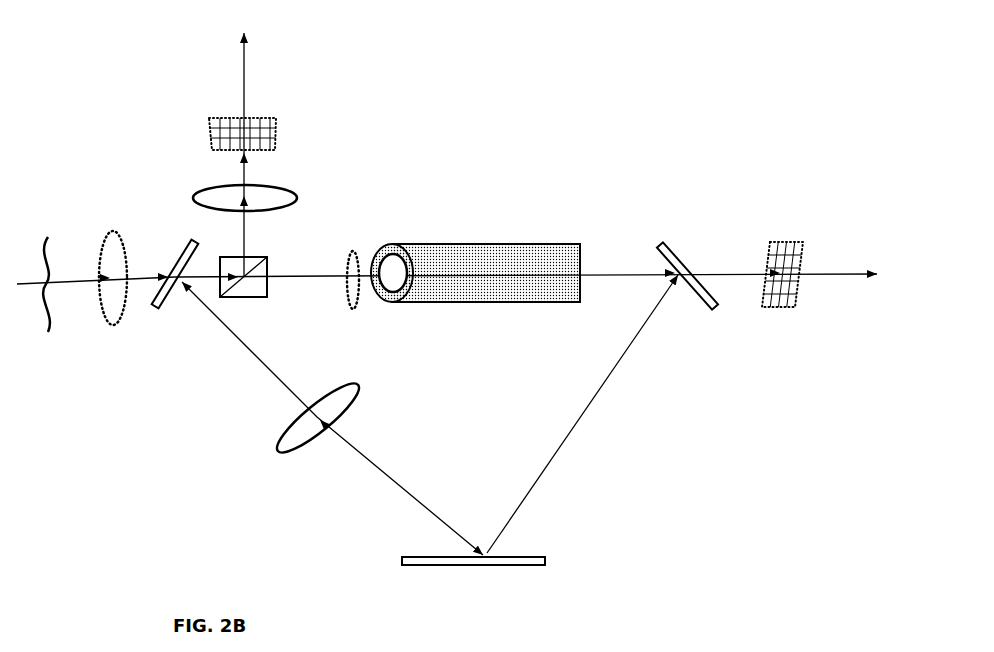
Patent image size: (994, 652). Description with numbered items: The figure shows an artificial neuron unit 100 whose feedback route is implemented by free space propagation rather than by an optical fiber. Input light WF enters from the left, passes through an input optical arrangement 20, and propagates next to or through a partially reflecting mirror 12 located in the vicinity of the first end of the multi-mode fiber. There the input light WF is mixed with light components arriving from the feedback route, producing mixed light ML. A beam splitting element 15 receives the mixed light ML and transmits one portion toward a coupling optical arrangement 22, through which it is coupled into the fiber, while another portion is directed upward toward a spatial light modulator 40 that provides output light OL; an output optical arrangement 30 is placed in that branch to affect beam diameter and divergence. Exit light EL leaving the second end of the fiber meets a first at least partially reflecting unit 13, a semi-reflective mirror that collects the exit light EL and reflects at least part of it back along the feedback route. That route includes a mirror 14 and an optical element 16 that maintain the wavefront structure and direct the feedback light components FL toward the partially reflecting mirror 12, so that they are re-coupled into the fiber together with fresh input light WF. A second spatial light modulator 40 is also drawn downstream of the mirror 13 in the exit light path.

The partially reflecting mirror 12 is at (177, 250).
The first at least partially reflecting unit 13 is at (688, 257).
The mirror 14 is at (513, 552).
The beam splitting element 15 is at (273, 295).
The optical element 16 is at (300, 447).
The input optical arrangement 20 is at (110, 232).
The coupling optical arrangement 22 is at (355, 252).
The output optical arrangement 30 is at (296, 192).
The spatial light modulator 40 is at (266, 128).
The artificial neuron unit 100 is at (532, 175).
The output light OL is at (238, 83).
The input light WF is at (35, 267).
The mixed light ML is at (297, 272).
The exit light EL is at (635, 277).
The feedback light components FL is at (235, 360).